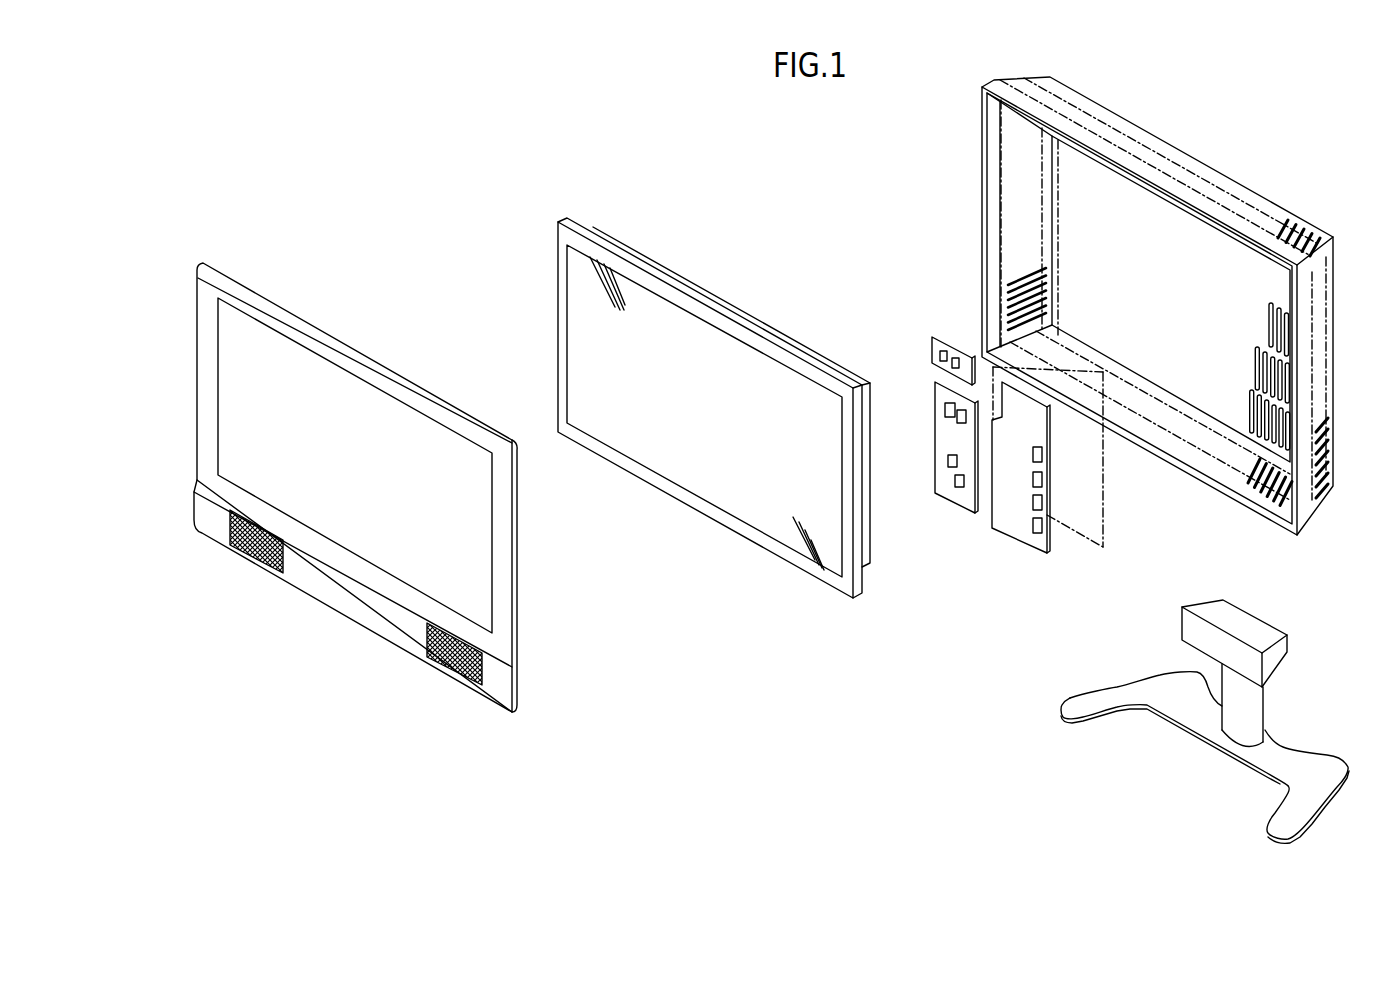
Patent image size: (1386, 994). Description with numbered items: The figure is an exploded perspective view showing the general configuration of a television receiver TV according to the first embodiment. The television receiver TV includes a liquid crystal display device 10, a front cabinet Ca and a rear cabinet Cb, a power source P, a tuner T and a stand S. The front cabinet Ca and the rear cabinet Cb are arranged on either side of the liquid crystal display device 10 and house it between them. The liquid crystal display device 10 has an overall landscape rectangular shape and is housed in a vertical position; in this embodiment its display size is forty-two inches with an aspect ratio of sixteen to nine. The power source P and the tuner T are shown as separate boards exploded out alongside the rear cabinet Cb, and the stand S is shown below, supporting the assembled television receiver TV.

The television receiver TV is at (735, 162).
The front cabinet Ca is at (340, 343).
The liquid crystal display device 10 is at (662, 262).
The rear cabinet Cb is at (1153, 152).
The tuner T is at (950, 502).
The power source P is at (1013, 538).
The stand S is at (1122, 712).